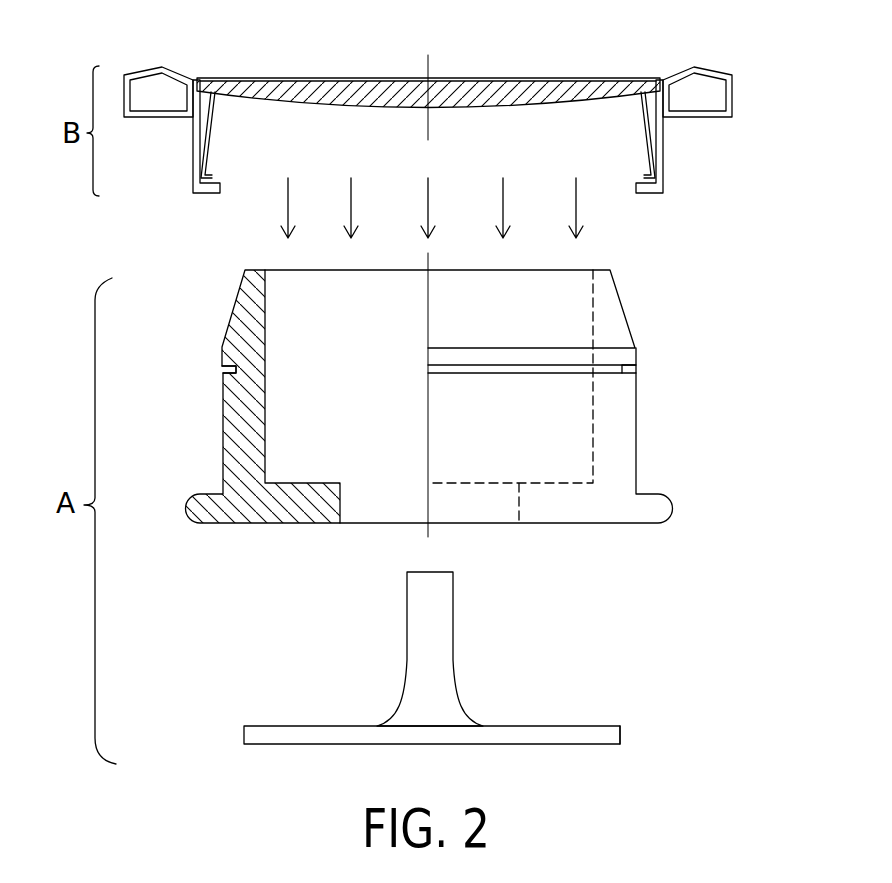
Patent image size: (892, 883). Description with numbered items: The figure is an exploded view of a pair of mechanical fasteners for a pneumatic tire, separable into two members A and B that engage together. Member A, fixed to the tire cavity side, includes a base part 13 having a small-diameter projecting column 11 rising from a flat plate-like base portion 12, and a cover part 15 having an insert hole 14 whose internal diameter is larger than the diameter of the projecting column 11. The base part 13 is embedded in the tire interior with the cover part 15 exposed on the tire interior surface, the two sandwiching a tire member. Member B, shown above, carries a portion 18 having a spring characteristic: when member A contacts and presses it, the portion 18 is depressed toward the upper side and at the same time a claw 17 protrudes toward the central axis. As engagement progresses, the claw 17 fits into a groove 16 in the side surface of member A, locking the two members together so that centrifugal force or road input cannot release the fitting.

The projecting column 11 is at (445, 648).
The base portion 12 is at (573, 733).
The base part 13 is at (625, 735).
The insert hole 14 is at (500, 513).
The cover part 15 is at (637, 318).
The groove 16 is at (222, 368).
The claw 17 is at (213, 180).
The portion 18 is at (365, 100).